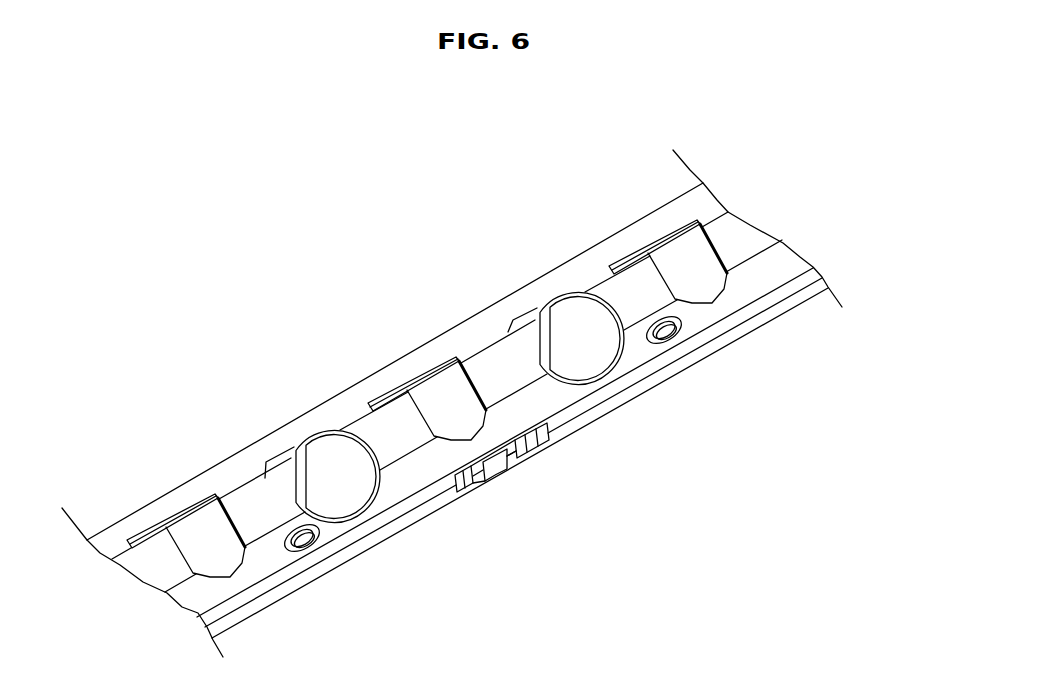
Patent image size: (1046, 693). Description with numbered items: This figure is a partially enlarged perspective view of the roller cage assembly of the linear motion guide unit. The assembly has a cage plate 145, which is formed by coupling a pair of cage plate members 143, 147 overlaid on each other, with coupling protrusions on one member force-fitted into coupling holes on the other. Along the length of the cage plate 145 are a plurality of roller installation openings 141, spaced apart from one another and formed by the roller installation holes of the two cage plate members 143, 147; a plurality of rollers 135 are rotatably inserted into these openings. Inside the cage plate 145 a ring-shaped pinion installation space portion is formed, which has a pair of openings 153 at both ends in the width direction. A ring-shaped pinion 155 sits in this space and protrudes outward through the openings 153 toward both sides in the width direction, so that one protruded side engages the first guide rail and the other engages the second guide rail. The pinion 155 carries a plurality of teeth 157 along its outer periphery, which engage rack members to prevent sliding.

The rollers 135 is at (335, 483).
The roller installation openings 141 is at (383, 447).
The cage plate member 143 is at (673, 373).
The cage plate 145 is at (861, 338).
The cage plate member 147 is at (712, 315).
The openings 153 is at (460, 483).
The pinion 155 is at (512, 468).
The teeth 157 is at (545, 445).